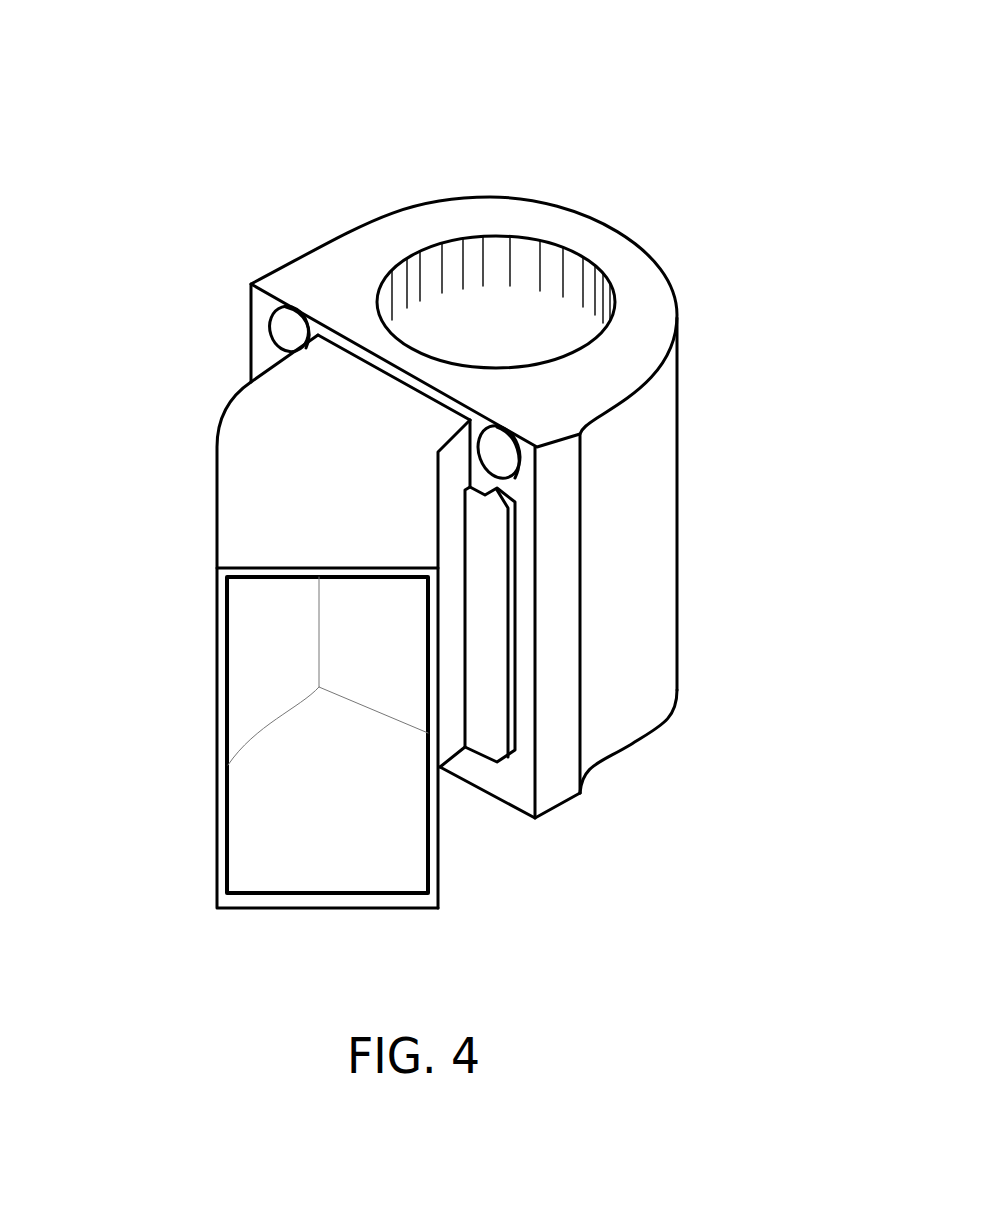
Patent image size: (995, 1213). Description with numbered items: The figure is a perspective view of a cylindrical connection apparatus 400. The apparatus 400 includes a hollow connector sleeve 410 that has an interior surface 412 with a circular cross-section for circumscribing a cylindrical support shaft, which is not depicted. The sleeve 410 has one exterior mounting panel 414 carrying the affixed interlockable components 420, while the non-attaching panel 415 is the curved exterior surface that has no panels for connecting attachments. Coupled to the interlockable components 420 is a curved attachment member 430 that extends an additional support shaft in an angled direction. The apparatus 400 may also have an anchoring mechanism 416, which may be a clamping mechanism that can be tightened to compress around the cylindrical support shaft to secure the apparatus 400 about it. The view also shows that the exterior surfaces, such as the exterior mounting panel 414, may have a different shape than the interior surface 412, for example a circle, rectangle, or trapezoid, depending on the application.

The cylindrical connection apparatus 400 is at (122, 97).
The hollow connector sleeve 410 is at (347, 269).
The interior surface 412 is at (551, 308).
The exterior mounting panel 414 is at (247, 342).
The non-attaching panel 415 is at (639, 459).
The anchoring mechanism 416 is at (515, 473).
The interlockable components 420 is at (487, 607).
The curved attachment member 430 is at (273, 495).